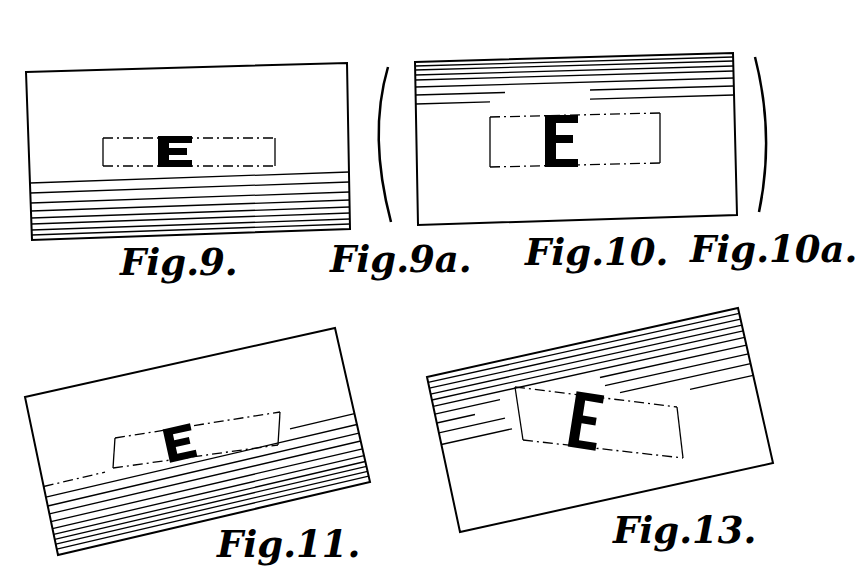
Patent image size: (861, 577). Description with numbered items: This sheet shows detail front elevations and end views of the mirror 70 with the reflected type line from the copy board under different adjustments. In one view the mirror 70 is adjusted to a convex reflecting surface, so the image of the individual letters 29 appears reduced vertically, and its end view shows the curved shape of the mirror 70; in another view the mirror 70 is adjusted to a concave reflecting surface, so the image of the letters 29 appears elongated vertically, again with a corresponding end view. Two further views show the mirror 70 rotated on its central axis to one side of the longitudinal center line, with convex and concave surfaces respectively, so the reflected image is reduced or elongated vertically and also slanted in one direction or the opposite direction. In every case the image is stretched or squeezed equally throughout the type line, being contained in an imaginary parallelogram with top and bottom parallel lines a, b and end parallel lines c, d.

In FIG. 9, the mirror 70 is at (120, 63).
In FIG. 9A, the mirror 70 is at (388, 77).
In FIG. 10, the mirror 70 is at (537, 65).
In FIG. 10A, the mirror 70 is at (768, 47).
In FIG. 11, the mirror 70 is at (235, 358).
In FIG. 13, the mirror 70 is at (488, 372).
In FIG. 9, the individual letters 29 is at (172, 137).
In FIG. 10, the individual letters 29 is at (557, 114).
In FIG. 11, the individual letters 29 is at (193, 427).
In FIG. 13, the individual letters 29 is at (583, 392).
In FIG. 9, the top parallel line a is at (135, 131).
In FIG. 10, the top parallel line a is at (520, 116).
In FIG. 11, the top parallel line a is at (160, 425).
In FIG. 13, the top parallel line a is at (655, 402).
In FIG. 9, the bottom parallel line b is at (135, 167).
In FIG. 10, the bottom parallel line b is at (533, 168).
In FIG. 11, the bottom parallel line b is at (160, 462).
In FIG. 13, the bottom parallel line b is at (635, 452).
In FIG. 9, the end parallel line c is at (103, 152).
In FIG. 10, the end parallel line c is at (490, 150).
In FIG. 11, the end parallel line c is at (115, 453).
In FIG. 13, the end parallel line c is at (520, 417).
In FIG. 9, the end parallel line d is at (275, 145).
In FIG. 10, the end parallel line d is at (660, 138).
In FIG. 11, the end parallel line d is at (282, 415).
In FIG. 13, the end parallel line d is at (683, 423).